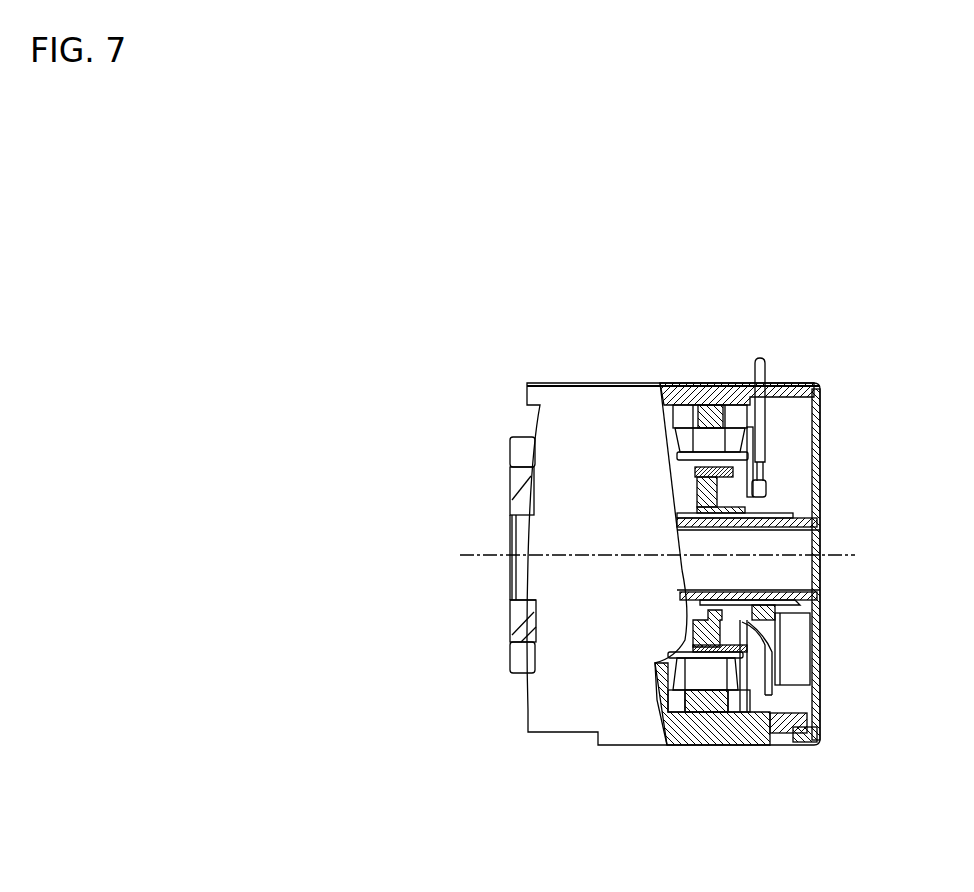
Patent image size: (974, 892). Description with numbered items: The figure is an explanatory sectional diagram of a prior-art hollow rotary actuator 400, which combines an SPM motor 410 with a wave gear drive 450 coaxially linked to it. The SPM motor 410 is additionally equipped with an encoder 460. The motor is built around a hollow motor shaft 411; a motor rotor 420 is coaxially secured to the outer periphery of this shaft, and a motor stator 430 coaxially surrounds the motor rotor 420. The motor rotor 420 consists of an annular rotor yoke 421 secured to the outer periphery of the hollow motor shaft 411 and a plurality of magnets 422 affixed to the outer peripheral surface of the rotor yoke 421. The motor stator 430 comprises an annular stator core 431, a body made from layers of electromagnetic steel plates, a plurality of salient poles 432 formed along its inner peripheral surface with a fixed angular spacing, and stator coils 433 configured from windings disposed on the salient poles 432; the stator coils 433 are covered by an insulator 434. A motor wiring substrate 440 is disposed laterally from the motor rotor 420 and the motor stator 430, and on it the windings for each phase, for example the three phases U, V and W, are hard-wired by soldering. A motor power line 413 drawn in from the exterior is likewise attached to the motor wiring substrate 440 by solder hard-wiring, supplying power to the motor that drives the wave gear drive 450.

The rotary actuator 400 is at (651, 337).
The SPM motor 410 is at (708, 374).
The hollow motor shaft 411 is at (774, 504).
The motor power line 413 is at (771, 366).
The motor rotor 420 is at (780, 621).
The rotor yoke 421 is at (764, 632).
The magnets 422 is at (784, 653).
The motor stator 430 is at (660, 682).
The stator core 431 is at (706, 717).
The salient poles 432 is at (737, 707).
The stator coils 433 is at (781, 746).
The insulator 434 is at (821, 746).
The motor wiring substrate 440 is at (758, 438).
The wave gear drive 450 is at (597, 374).
The encoder 460 is at (808, 708).